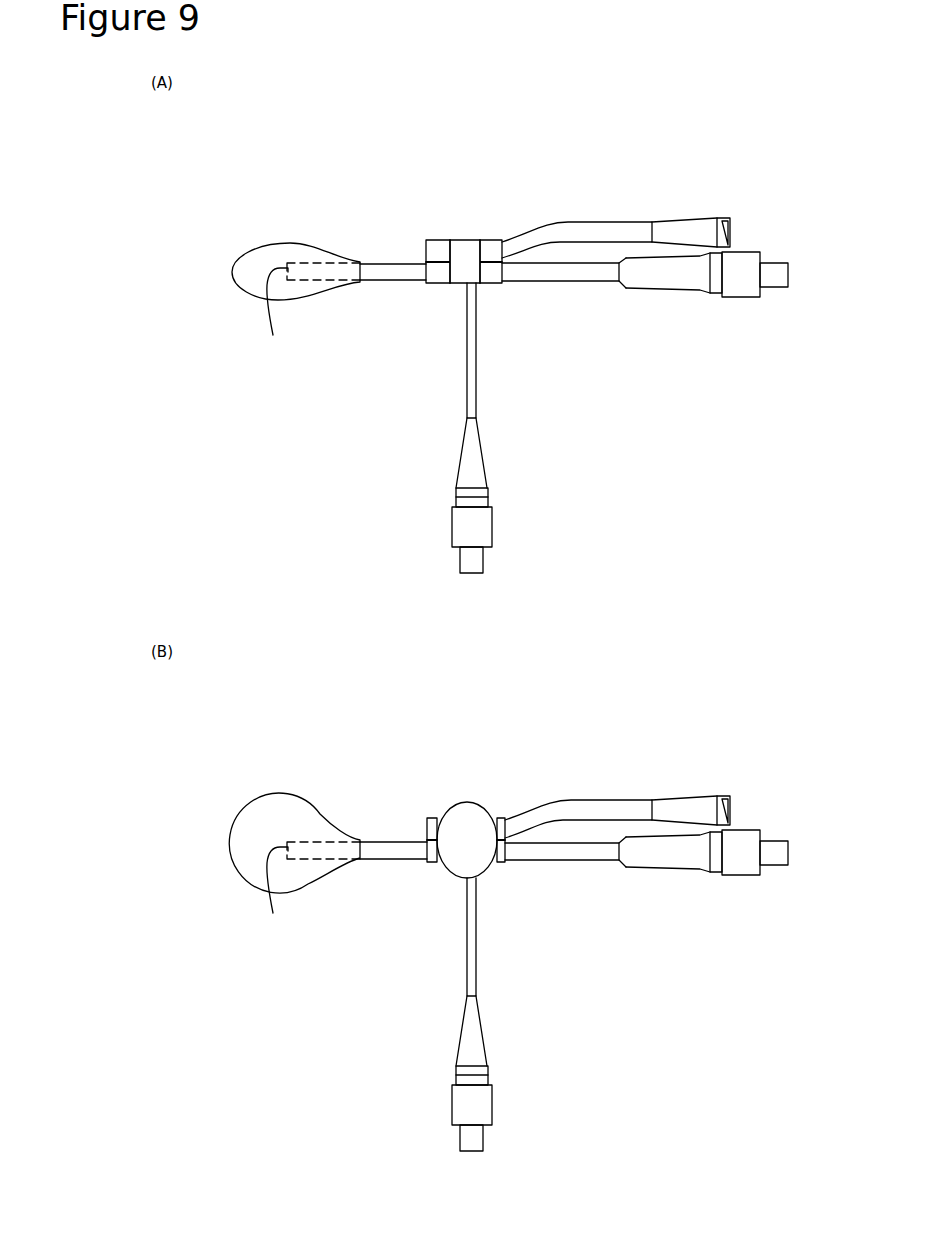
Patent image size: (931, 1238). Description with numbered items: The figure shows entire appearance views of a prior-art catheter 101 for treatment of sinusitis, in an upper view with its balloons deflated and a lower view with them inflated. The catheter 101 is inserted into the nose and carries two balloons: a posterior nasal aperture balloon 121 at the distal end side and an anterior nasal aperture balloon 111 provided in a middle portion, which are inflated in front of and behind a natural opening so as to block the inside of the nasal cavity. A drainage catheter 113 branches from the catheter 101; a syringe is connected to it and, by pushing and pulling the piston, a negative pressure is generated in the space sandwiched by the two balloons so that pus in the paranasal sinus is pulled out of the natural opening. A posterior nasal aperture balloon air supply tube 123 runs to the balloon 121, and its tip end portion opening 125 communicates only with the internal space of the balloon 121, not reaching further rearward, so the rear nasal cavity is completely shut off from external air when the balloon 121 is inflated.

The catheter for treatment of sinusitis 101 is at (768, 206).
The anterior nasal aperture balloon 111 is at (460, 247).
The drainage catheter 113 is at (614, 228).
The posterior nasal aperture balloon 121 is at (297, 250).
The posterior nasal aperture balloon air supply tube 123 is at (373, 266).
The tip end portion opening 125 is at (311, 600).